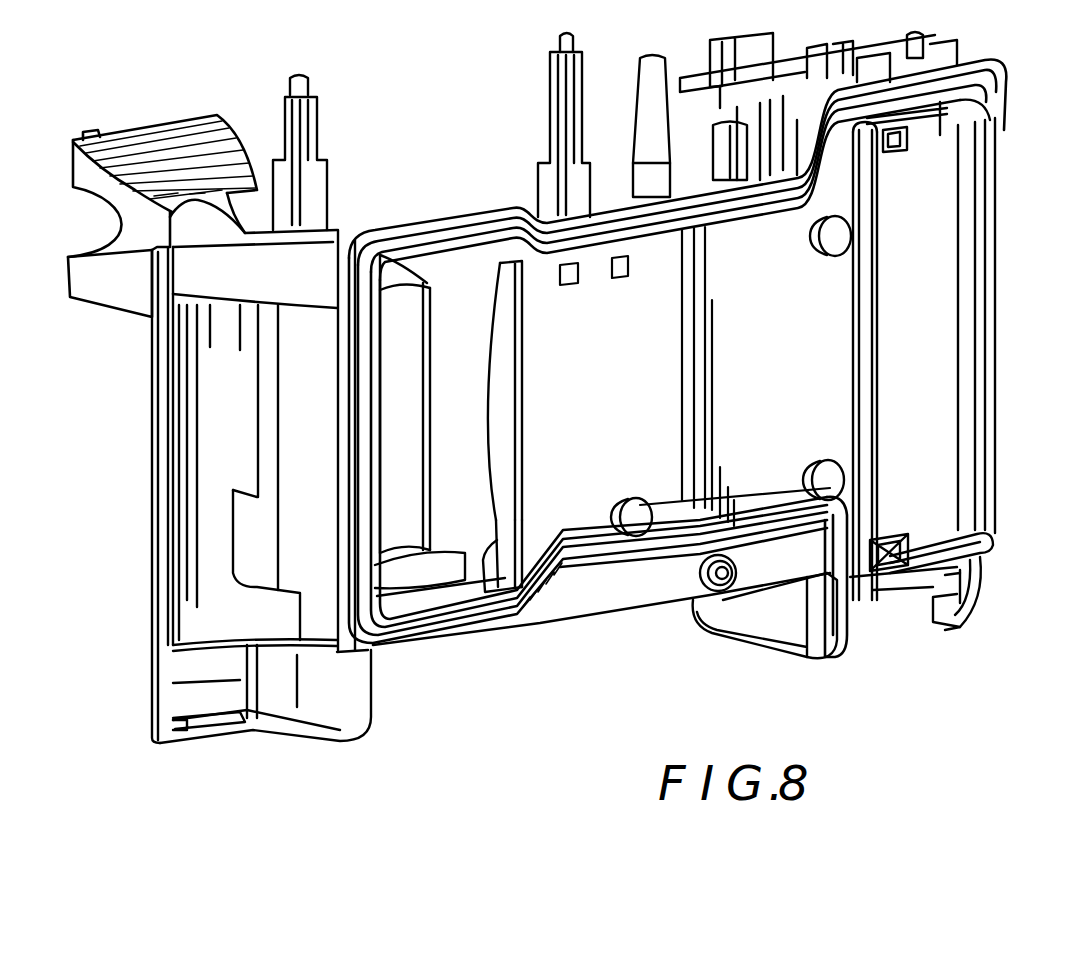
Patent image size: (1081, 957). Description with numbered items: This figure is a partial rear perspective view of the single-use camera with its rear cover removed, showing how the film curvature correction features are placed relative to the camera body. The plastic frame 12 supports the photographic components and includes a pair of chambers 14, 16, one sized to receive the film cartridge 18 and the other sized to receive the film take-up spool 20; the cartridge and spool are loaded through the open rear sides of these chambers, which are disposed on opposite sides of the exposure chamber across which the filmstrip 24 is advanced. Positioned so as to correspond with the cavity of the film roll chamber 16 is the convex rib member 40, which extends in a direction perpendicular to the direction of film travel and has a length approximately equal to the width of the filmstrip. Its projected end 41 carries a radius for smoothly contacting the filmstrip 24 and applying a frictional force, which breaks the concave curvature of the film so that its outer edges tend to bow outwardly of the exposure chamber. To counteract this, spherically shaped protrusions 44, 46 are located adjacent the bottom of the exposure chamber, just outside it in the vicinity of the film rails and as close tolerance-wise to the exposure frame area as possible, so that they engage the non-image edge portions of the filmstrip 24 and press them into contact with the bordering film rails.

The plastic frame 12 is at (478, 212).
The chamber 14 is at (932, 575).
The chamber 16 is at (428, 276).
The film cartridge 18 is at (940, 370).
The film take-up spool 20 is at (420, 583).
The filmstrip 24 is at (827, 410).
The rib member 40 is at (497, 526).
The projected end 41 is at (526, 280).
The spherical protrusion 44 is at (822, 250).
The spherical protrusion 46 is at (832, 480).